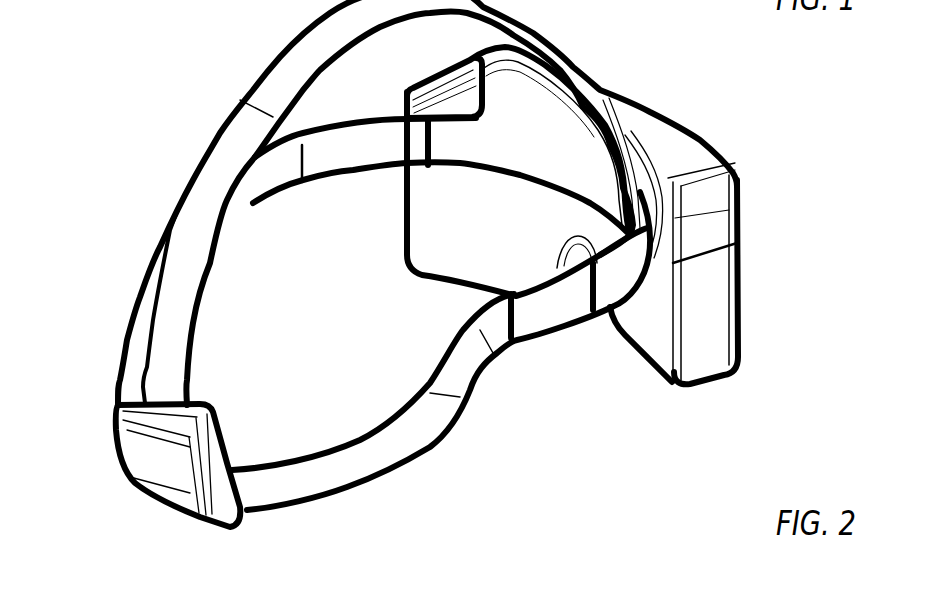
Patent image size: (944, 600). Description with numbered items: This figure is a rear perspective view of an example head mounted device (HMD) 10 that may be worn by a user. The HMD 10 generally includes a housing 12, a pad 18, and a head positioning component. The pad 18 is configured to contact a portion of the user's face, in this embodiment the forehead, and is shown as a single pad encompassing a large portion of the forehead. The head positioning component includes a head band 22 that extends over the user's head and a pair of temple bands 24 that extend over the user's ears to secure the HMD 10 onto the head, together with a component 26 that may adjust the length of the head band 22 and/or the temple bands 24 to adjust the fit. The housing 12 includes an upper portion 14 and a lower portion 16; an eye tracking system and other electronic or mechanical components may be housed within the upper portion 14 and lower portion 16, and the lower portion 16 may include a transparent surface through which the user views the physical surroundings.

The head mounted device 10 is at (133, 47).
The housing 12 is at (757, 118).
The upper portion 14 is at (685, 119).
The lower portion 16 is at (631, 331).
The pad 18 is at (544, 135).
The head band 22 is at (301, 23).
The temple bands 24 is at (255, 207).
The component 26 is at (160, 485).